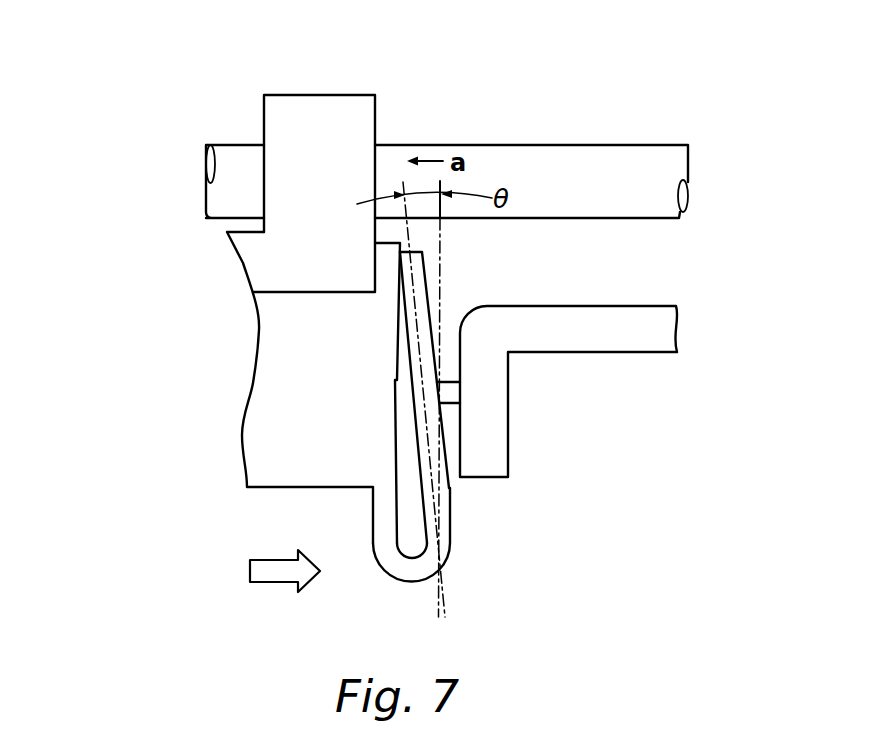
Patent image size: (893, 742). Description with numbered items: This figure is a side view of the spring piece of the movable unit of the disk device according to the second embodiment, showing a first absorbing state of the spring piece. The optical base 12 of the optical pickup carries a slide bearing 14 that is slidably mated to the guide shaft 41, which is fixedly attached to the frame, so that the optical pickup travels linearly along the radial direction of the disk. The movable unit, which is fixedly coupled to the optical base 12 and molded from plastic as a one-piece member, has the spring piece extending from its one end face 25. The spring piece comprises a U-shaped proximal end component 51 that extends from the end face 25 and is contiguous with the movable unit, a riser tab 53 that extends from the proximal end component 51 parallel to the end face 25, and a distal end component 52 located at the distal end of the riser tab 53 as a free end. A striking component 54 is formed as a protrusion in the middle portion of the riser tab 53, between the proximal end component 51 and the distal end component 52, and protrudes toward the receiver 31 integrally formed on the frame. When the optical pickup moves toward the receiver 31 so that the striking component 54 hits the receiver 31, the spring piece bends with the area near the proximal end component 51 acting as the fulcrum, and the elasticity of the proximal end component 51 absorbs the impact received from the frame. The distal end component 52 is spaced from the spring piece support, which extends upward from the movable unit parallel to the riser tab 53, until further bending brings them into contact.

The slide bearing 14 is at (343, 104).
The guide shaft 41 is at (573, 143).
The optical base 12 is at (253, 269).
The one end face 25 is at (397, 462).
The distal end component 52 is at (428, 259).
The striking component 54 is at (461, 385).
The receiver 31 is at (461, 430).
The riser tab 53 is at (448, 489).
The proximal end component 51 is at (412, 582).